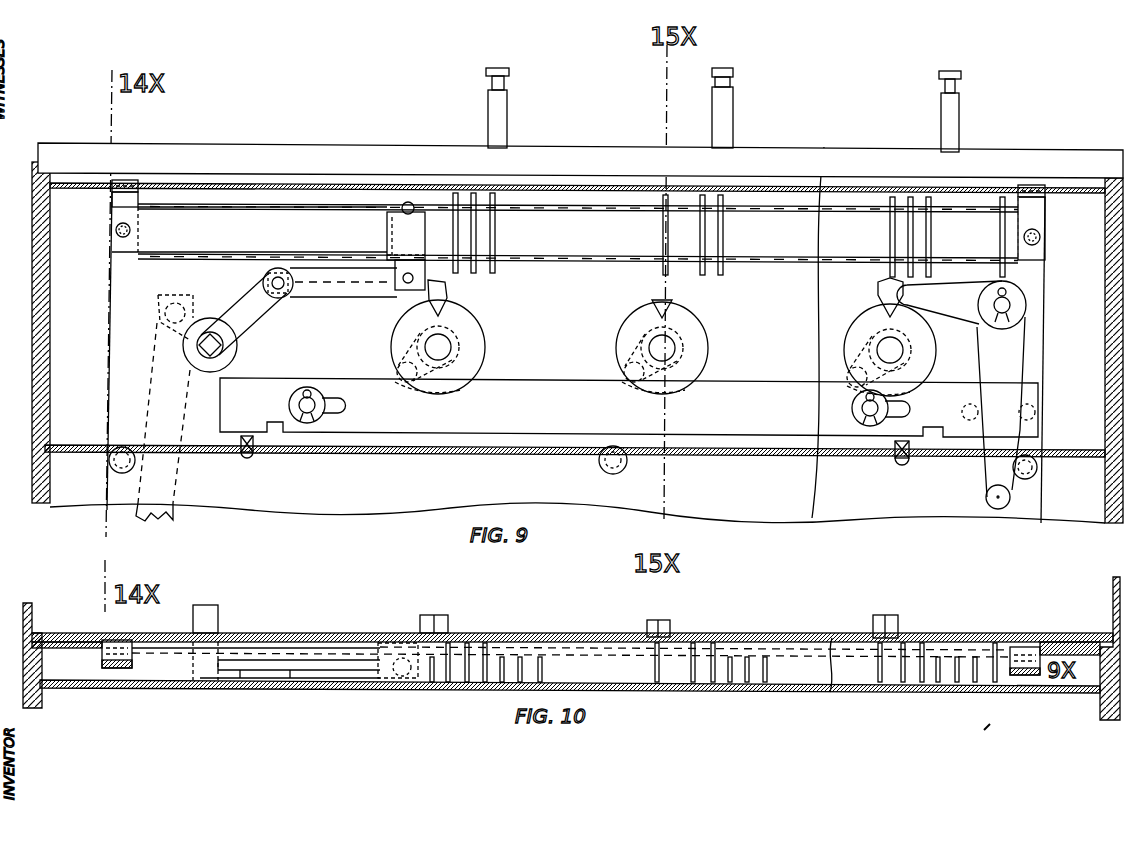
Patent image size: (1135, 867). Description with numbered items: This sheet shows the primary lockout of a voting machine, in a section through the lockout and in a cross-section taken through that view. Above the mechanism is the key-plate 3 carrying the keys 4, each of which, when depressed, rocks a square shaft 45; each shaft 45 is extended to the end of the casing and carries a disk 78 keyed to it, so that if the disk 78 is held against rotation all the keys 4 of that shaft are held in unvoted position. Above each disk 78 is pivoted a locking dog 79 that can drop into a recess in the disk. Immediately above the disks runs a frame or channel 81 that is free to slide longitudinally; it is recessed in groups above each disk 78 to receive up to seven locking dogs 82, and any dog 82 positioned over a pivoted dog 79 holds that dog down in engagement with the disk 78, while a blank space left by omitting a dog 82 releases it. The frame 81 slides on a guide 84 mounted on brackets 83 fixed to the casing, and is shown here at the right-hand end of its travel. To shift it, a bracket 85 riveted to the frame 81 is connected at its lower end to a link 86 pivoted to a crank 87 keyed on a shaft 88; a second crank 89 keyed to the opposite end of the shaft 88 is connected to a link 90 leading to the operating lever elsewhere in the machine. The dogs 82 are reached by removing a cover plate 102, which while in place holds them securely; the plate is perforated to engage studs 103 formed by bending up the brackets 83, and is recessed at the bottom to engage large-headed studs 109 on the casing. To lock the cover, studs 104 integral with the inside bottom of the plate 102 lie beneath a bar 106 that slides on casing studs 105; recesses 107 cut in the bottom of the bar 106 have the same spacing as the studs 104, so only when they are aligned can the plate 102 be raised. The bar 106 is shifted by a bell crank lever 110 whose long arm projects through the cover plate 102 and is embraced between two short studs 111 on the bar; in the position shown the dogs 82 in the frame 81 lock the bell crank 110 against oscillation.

In FIG. 9, the key-plate 3 is at (873, 150).
In FIG. 9, the keys 4 is at (507, 107).
In FIG. 9, the square shaft 45 is at (445, 345).
In FIG. 9, the disk 78 is at (473, 357).
In FIG. 9, the locking dog 79 is at (424, 297).
In FIG. 9, the frame or channel 81 is at (583, 207).
In FIG. 10, the frame or channel 81 is at (582, 648).
In FIG. 9, the locking dogs 82 is at (455, 195).
In FIG. 10, the locking dogs 82 is at (713, 662).
In FIG. 9, the brackets 83 is at (120, 197).
In FIG. 9, the guide 84 is at (183, 240).
In FIG. 10, the guide 84 is at (325, 653).
In FIG. 9, the bracket 85 is at (405, 232).
In FIG. 9, the link 86 is at (332, 267).
In FIG. 9, the crank 87 is at (258, 313).
In FIG. 9, the shaft 88 is at (212, 347).
In FIG. 9, the crank 89 is at (197, 310).
In FIG. 9, the link 90 is at (165, 373).
In FIG. 9, the cover plate 102 is at (728, 457).
In FIG. 10, the cover plate 102 is at (940, 693).
In FIG. 9, the studs 103 is at (138, 183).
In FIG. 10, the studs 103 is at (125, 668).
In FIG. 9, the studs 104 is at (253, 453).
In FIG. 9, the studs 105 is at (310, 403).
In FIG. 9, the bar 106 is at (742, 390).
In FIG. 9, the recesses 107 is at (273, 425).
In FIG. 9, the studs 109 is at (112, 462).
In FIG. 9, the bell crank lever 110 is at (1003, 350).
In FIG. 9, the short studs 111 is at (1035, 412).